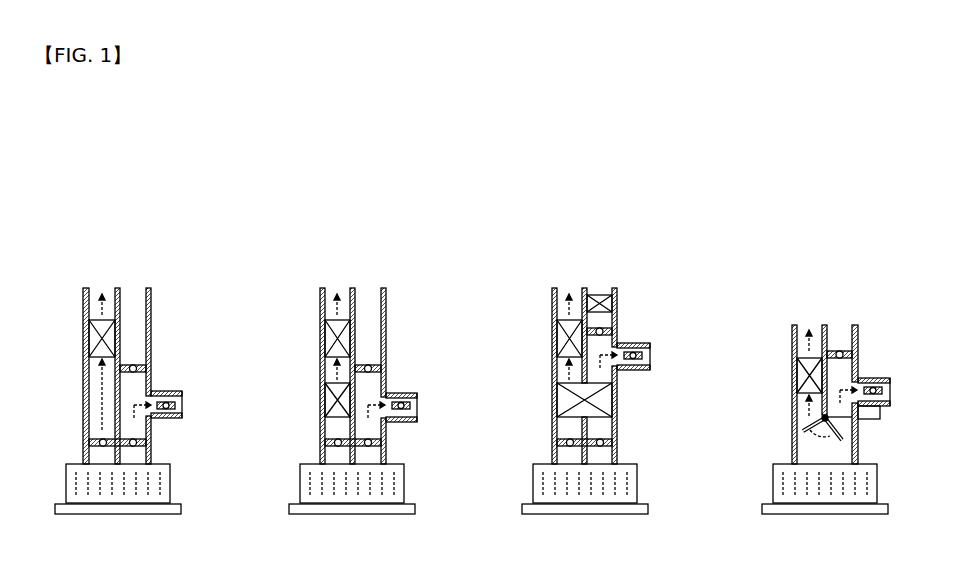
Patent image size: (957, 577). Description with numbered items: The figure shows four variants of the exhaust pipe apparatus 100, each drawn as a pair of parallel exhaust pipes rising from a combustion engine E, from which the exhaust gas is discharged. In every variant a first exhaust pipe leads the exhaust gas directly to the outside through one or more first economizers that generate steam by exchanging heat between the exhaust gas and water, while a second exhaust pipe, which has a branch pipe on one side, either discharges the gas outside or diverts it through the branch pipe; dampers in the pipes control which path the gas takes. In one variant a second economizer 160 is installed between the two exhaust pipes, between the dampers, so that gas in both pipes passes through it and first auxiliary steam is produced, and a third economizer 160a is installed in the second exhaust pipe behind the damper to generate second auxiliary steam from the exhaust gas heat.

The exhaust pipe apparatus 100 is at (82, 196).
The second economizer 160 is at (556, 401).
The third economizer 160a is at (614, 302).
The combustion engine E is at (165, 484).